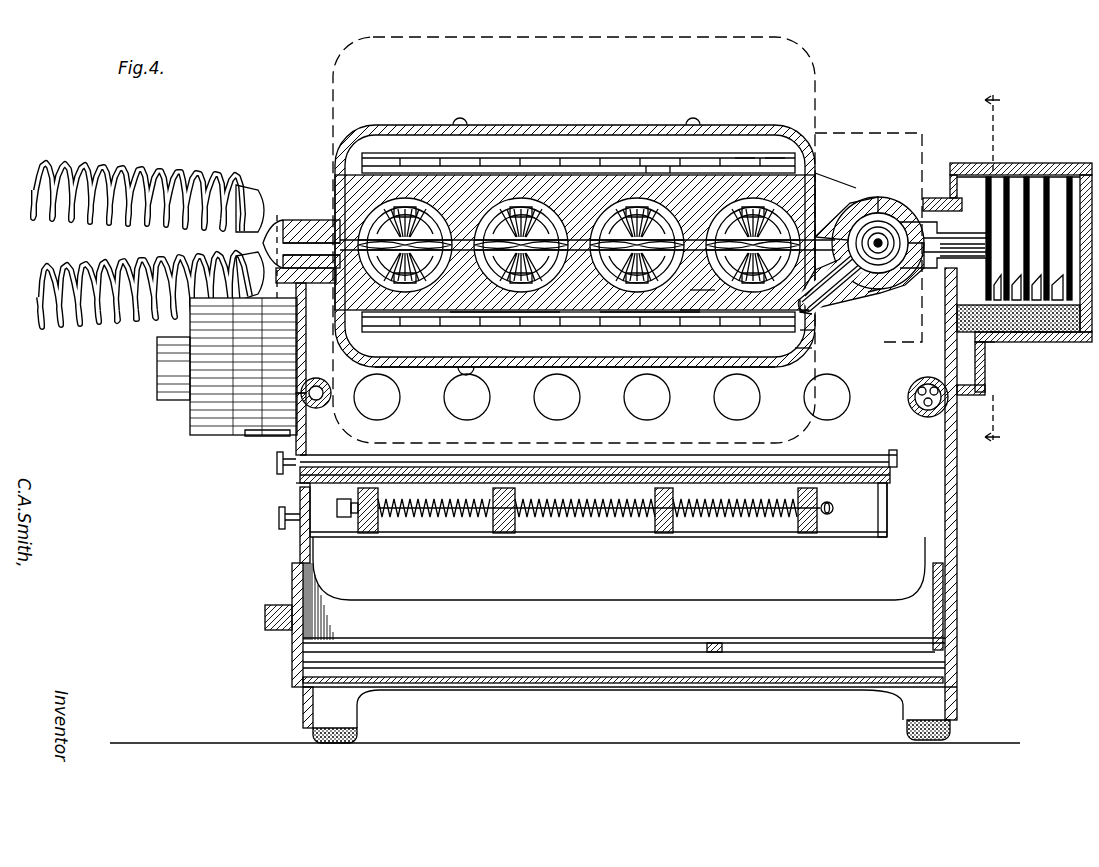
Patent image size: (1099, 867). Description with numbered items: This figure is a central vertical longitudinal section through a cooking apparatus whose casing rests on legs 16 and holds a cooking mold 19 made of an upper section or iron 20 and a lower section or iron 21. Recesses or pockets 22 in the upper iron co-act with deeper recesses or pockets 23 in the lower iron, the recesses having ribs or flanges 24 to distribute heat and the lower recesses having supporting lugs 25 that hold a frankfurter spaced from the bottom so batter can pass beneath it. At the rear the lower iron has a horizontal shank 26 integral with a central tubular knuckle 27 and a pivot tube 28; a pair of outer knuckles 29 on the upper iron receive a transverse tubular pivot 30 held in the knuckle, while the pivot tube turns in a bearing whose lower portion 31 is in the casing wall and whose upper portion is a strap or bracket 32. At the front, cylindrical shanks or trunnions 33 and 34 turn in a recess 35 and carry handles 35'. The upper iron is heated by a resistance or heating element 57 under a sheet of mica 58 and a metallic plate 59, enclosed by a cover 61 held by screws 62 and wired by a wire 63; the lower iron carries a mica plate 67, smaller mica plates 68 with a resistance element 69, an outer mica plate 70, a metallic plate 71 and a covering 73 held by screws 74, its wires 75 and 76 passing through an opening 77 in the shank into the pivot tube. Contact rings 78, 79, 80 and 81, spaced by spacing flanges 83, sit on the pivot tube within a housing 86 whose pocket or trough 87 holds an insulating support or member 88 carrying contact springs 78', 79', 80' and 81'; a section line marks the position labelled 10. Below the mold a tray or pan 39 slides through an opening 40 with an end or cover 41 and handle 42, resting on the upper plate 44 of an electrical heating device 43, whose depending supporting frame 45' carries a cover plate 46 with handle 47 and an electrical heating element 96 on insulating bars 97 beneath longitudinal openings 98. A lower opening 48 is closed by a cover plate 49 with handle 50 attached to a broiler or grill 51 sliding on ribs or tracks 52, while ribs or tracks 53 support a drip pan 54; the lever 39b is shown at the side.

The section line 10 is at (996, 269).
The legs 16 is at (907, 730).
The cooking mold 19 is at (326, 157).
The upper section or iron 20 is at (578, 125).
The lower section or iron 21 is at (600, 368).
The recesses or pockets 22 is at (420, 232).
The recesses or pockets 23 is at (418, 310).
The ribs or flanges 24 is at (540, 232).
The supporting lugs 25 is at (546, 326).
The horizontal shank 26 is at (855, 294).
The central tubular knuckle 27 is at (875, 205).
The pivot tube 28 is at (958, 222).
The outer knuckles 29 is at (856, 188).
The transverse tubular pivot 30 is at (890, 225).
The lower portion of bearing 31 is at (951, 275).
The strap or bracket 32 is at (935, 198).
The cylindrical shank or trunnion 33 is at (300, 225).
The cylindrical shank or trunnion 34 is at (312, 284).
The recess 35 is at (168, 343).
The handles 35' is at (148, 211).
The tray or pan 39 is at (696, 455).
The lever 39b is at (250, 437).
The opening 40 is at (307, 440).
The end or cover 41 is at (296, 472).
The handle 42 is at (277, 462).
The electrical heating device 43 is at (603, 530).
The upper plate 44 is at (745, 488).
The depending supporting frame 45' is at (855, 524).
The cover plate 46 is at (316, 540).
The handle 47 is at (279, 518).
The lower opening 48 is at (303, 705).
The cover plate 49 is at (292, 660).
The handle 50 is at (265, 620).
The broiler or grill 51 is at (525, 640).
The ribs or tracks 52 is at (458, 660).
The ribs or tracks 53 is at (580, 684).
The drip pan 54 is at (665, 690).
The resistance or heating element 57 is at (672, 170).
The sheet of mica 58 is at (773, 165).
The metallic plate 59 is at (742, 160).
The cover 61 is at (616, 158).
The screws 62 is at (693, 118).
The wire 63 is at (918, 282).
The mica plate 67 is at (805, 330).
The smaller mica plates 68 is at (800, 349).
The resistance element 69 is at (640, 326).
The outer mica plate 70 is at (737, 326).
The metallic plate 71 is at (707, 345).
The covering 73 is at (690, 350).
The screws 74 is at (472, 373).
The wire 75 is at (818, 292).
The wire 76 is at (815, 316).
The opening 77 is at (885, 290).
The contact ring 78 is at (1004, 221).
The contact ring 79 is at (1026, 223).
The contact ring 80 is at (1050, 218).
The contact ring 81 is at (1069, 223).
The contact spring 78' is at (980, 389).
The contact spring 79' is at (980, 238).
The contact spring 80' is at (1039, 379).
The contact spring 81' is at (1059, 372).
The spacing flanges 83 is at (988, 178).
The housing 86 is at (1065, 336).
The pocket or trough 87 is at (997, 340).
The insulating support or member 88 is at (1018, 340).
The electrical heating element 96 is at (712, 519).
The insulating bars 97 is at (662, 534).
The longitudinal openings 98 is at (757, 410).